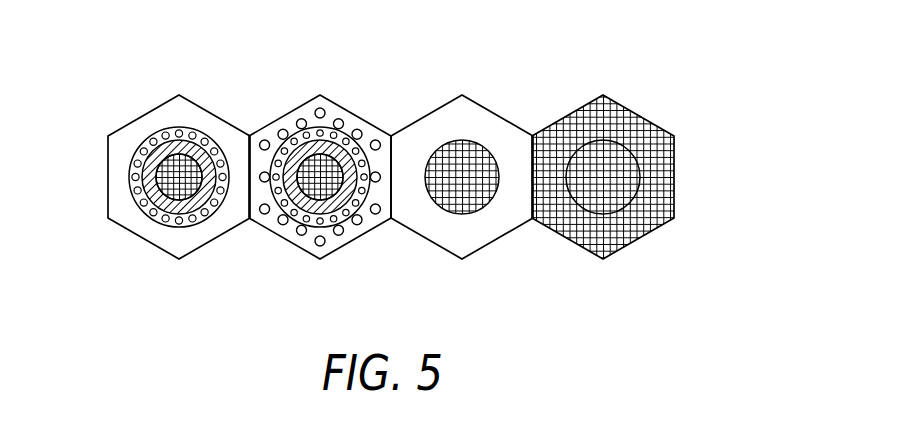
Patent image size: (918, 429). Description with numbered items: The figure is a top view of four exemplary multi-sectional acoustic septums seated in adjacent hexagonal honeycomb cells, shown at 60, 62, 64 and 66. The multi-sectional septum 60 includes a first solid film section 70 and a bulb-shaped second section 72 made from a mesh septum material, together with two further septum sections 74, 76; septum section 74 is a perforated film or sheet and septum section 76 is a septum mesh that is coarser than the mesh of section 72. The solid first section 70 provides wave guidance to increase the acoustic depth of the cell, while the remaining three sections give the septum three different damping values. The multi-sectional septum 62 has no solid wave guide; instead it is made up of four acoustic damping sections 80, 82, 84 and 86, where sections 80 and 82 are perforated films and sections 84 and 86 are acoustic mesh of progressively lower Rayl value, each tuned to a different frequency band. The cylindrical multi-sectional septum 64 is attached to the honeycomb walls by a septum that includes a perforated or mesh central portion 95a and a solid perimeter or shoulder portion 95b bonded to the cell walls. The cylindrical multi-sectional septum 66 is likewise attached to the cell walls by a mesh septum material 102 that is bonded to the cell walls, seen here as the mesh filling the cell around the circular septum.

The multi-sectional septum 60 is at (185, 107).
The multi-sectional septum 62 is at (330, 107).
The cylindrical multi-sectional septum 64 is at (456, 140).
The cylindrical multi-sectional septum 66 is at (627, 147).
The first solid film section 70 is at (128, 133).
The bulb-shaped second section 72 is at (167, 177).
The septum section 74 is at (158, 220).
The septum section 76 is at (182, 208).
The acoustic damping section 80 is at (354, 124).
The acoustic damping section 82 is at (338, 213).
The acoustic damping section 84 is at (313, 210).
The acoustic damping section 86 is at (314, 170).
The perforated or mesh central portion 95a is at (464, 207).
The solid perimeter or shoulder portion 95b is at (497, 131).
The mesh septum material 102 is at (651, 180).